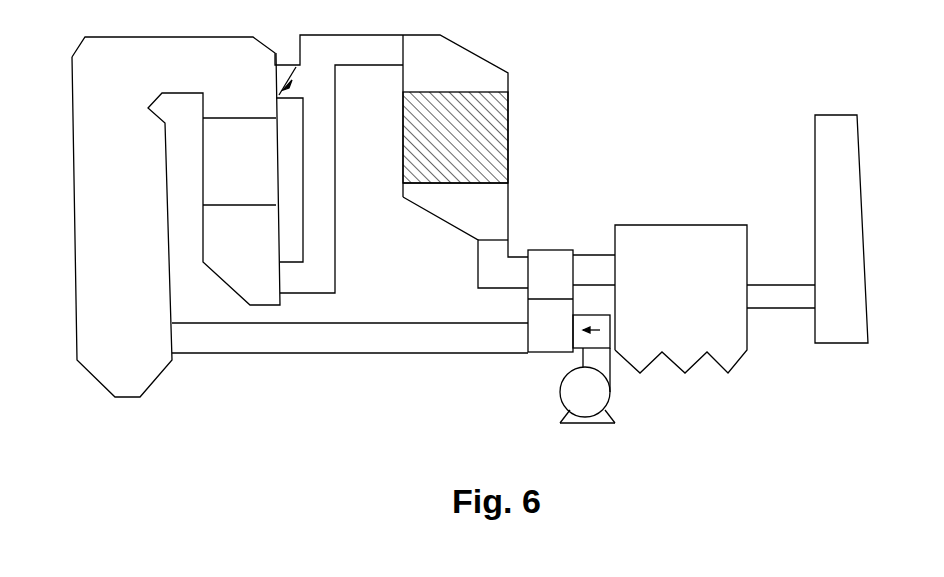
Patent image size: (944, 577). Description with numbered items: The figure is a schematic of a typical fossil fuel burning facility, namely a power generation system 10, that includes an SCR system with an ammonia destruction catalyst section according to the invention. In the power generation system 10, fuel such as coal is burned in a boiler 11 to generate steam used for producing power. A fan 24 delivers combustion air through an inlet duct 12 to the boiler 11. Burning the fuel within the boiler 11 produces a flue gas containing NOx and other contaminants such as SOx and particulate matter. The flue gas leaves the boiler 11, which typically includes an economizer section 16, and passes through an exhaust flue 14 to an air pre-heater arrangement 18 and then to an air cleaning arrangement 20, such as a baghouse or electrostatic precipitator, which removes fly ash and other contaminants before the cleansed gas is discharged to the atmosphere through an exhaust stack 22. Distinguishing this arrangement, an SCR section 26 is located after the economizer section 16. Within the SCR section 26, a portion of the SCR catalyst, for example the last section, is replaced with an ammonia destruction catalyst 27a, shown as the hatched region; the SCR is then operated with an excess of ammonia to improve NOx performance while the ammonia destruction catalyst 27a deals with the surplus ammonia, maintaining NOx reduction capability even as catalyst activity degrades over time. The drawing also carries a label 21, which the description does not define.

The power generation system 10 is at (279, 234).
The boiler 11 is at (88, 277).
The inlet duct 12 is at (373, 342).
The exhaust flue 14 is at (323, 205).
The economizer section 16 is at (245, 173).
The air pre-heater arrangement 18 is at (547, 333).
The air cleaning arrangement 20 is at (688, 240).
The heating element 21 is at (477, 135).
The exhaust stack 22 is at (843, 197).
The fan 24 is at (602, 393).
The SCR section 26 is at (477, 52).
The ammonia destruction catalyst 27a is at (502, 163).